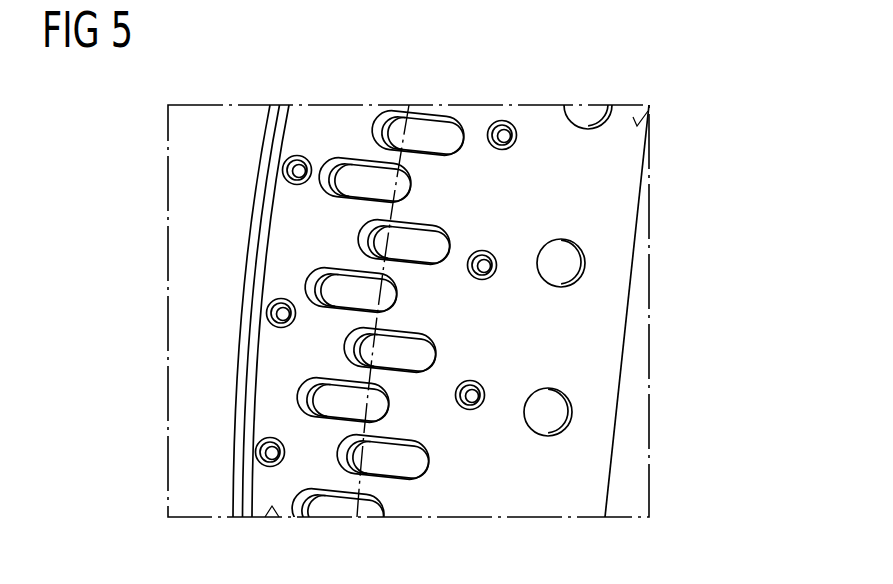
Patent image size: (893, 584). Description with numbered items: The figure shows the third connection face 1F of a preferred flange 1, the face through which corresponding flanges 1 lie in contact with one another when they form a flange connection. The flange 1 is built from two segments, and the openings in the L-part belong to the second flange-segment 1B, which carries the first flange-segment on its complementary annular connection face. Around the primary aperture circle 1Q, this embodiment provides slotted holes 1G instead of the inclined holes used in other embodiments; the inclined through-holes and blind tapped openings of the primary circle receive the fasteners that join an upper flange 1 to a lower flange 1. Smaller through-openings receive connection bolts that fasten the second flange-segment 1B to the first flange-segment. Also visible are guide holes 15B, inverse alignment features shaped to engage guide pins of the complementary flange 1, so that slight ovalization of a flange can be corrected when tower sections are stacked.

The flange 1 is at (213, 407).
The third annular connection face 1F is at (267, 513).
The second flange-segment 1B is at (616, 390).
The slotted hole 1G is at (349, 341).
The primary aperture circle 1Q is at (378, 244).
The guide hole 15B is at (512, 373).